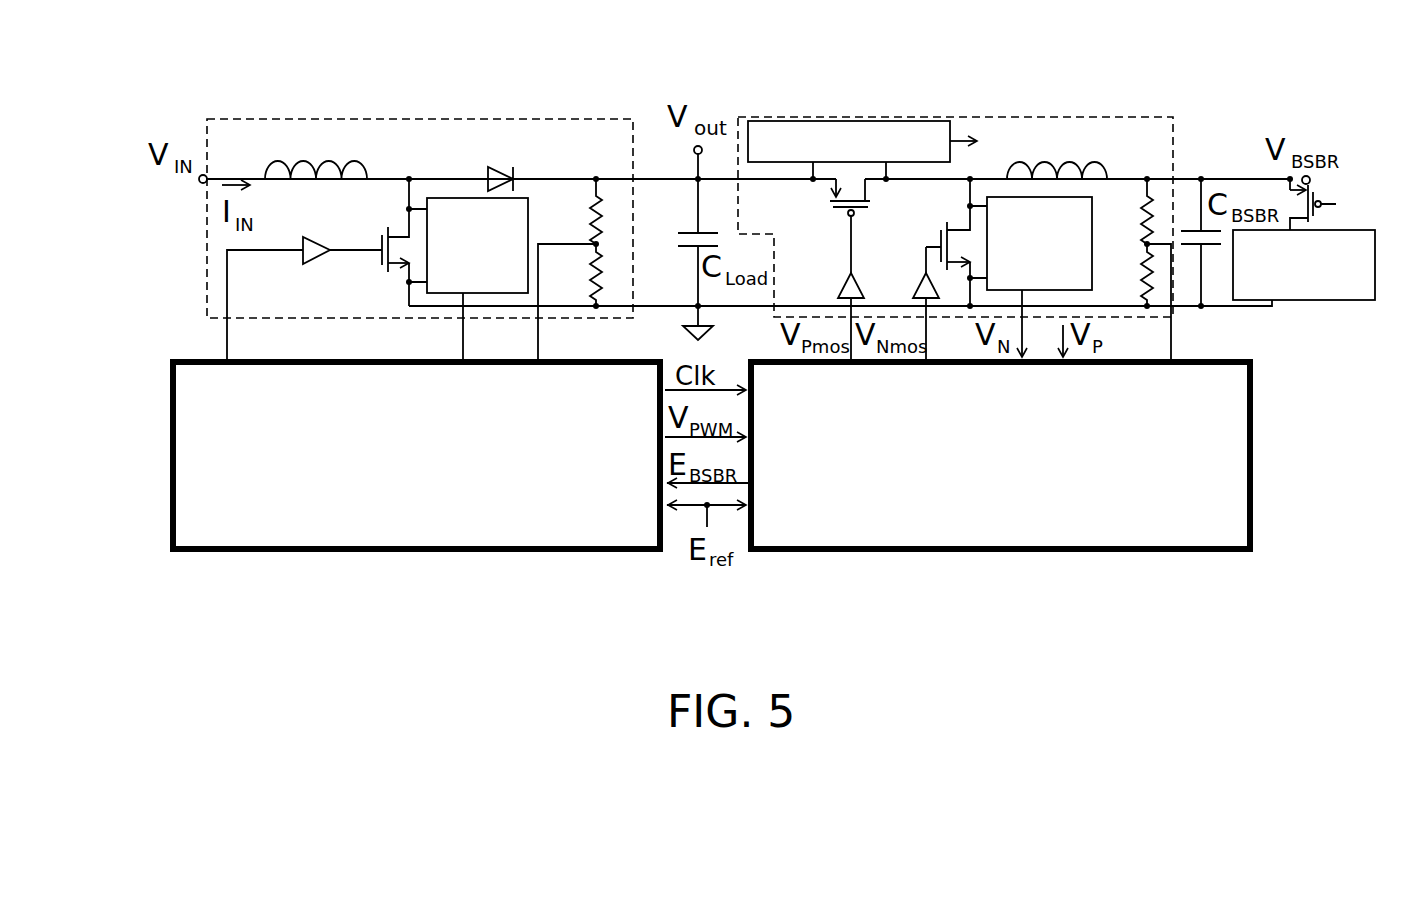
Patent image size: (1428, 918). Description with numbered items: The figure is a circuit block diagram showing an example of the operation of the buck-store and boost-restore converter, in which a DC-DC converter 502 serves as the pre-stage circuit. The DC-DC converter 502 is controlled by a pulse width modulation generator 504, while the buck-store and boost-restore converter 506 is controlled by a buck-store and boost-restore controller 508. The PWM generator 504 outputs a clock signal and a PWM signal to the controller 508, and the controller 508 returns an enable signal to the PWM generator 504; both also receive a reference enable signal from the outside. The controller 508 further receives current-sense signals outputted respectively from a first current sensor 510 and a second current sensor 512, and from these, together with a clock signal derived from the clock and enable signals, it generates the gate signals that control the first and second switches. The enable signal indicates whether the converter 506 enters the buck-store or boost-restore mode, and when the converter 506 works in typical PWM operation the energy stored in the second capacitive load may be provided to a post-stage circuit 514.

The DC-DC converter 502 is at (413, 118).
The pulse width modulation (PWM) generator 504 is at (398, 553).
The buck-store and boost-restore converter 506 is at (955, 206).
The buck-store and boost-restore controller 508 is at (985, 553).
The current sensor 510 is at (862, 118).
The current sensor 512 is at (1092, 210).
The post-stage circuit 514 is at (1315, 300).